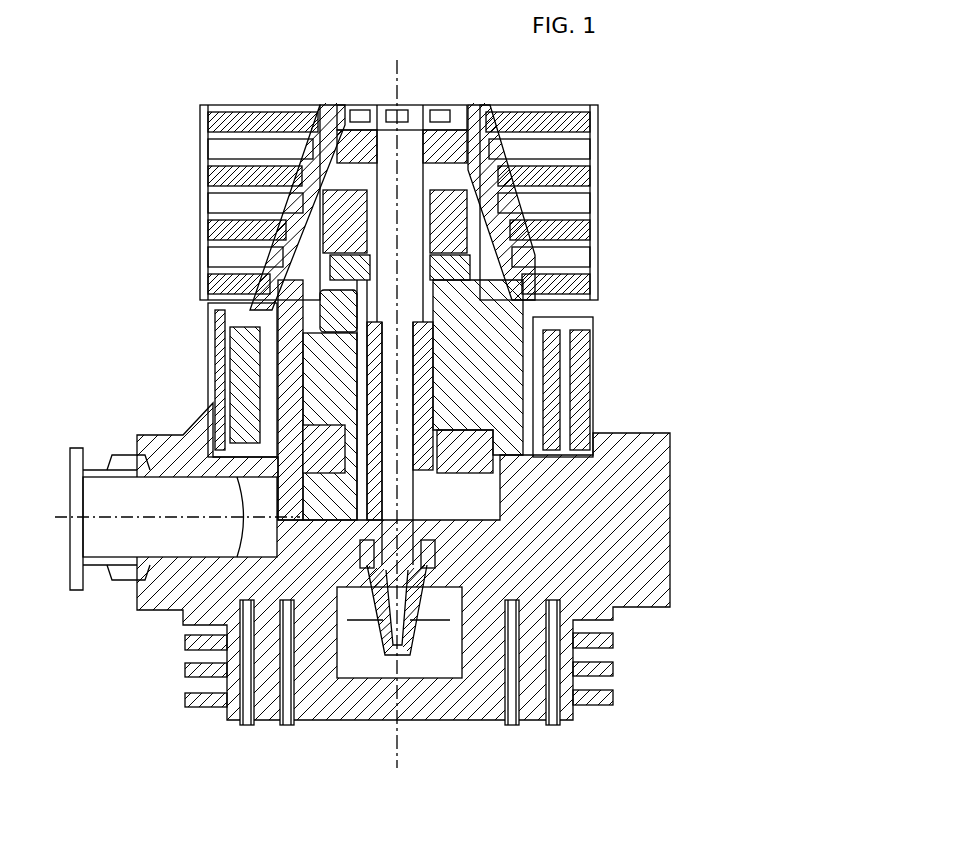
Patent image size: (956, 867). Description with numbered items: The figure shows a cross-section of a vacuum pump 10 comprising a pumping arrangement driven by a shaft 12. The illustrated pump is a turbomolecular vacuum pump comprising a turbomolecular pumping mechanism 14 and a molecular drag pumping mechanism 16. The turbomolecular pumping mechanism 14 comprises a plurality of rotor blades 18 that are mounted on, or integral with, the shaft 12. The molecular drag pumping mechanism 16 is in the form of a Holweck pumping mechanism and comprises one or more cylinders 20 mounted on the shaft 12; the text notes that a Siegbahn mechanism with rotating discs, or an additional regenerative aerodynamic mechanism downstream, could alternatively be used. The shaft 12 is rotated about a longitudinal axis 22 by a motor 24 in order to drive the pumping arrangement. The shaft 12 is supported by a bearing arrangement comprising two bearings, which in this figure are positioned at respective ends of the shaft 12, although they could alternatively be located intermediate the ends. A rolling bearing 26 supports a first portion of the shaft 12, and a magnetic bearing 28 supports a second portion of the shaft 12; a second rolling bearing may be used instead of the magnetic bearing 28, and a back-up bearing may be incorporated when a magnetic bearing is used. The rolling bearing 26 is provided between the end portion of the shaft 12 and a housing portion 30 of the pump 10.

The vacuum pump 10 is at (108, 258).
The shaft 12 is at (413, 140).
The turbomolecular pumping mechanism 14 is at (645, 225).
The molecular drag pumping mechanism 16 is at (645, 350).
The rotor blades 18 is at (210, 157).
The cylinders 20 is at (228, 372).
The longitudinal axis 22 is at (395, 80).
The motor 24 is at (335, 428).
The rolling bearing 26 is at (448, 542).
The magnetic bearing 28 is at (345, 200).
The housing portion 30 is at (190, 622).